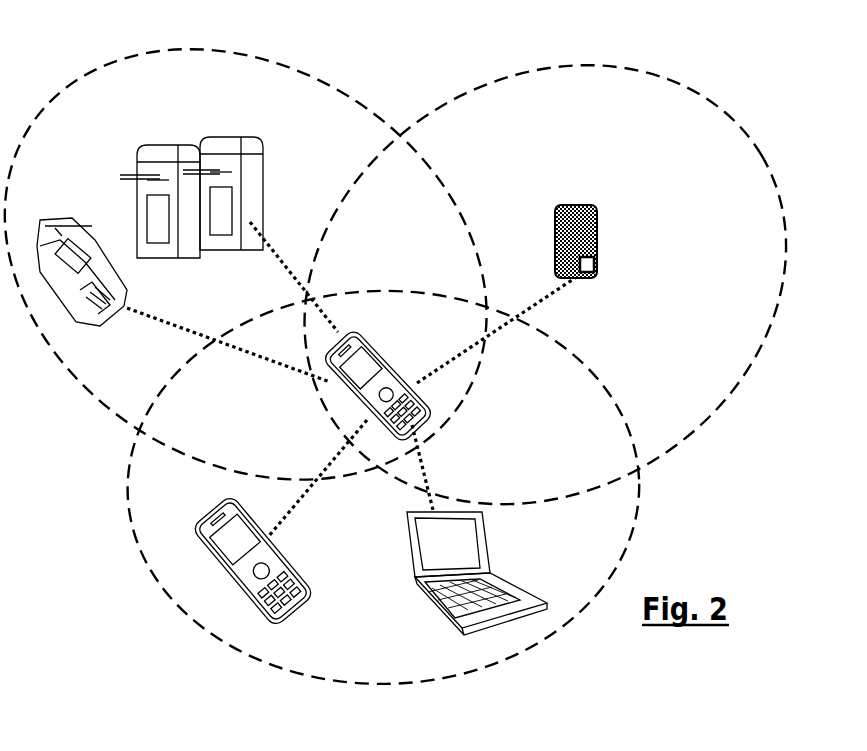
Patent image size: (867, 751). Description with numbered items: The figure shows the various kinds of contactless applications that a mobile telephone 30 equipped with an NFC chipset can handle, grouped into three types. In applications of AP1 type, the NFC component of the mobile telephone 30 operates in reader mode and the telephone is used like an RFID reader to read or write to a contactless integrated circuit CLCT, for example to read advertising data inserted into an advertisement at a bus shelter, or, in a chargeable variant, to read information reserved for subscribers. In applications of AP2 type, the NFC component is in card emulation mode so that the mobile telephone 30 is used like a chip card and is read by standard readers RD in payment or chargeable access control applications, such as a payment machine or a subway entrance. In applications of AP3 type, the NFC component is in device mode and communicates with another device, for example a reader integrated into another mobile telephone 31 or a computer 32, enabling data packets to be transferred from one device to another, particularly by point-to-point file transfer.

The mobile telephone 30 is at (377, 330).
The mobile telephone 31 is at (252, 497).
The computer 32 is at (471, 501).
The readers RD is at (192, 131).
The applications of AP1 type AP1 is at (545, 295).
The applications of AP2 type AP2 is at (283, 283).
The applications of AP3 type AP3 is at (383, 487).
The contactless integrated circuit CLCT is at (586, 278).